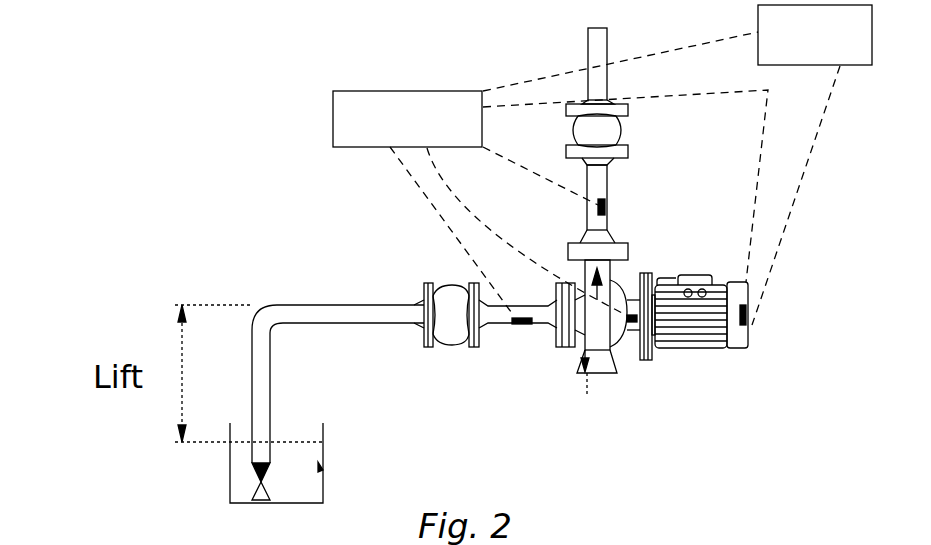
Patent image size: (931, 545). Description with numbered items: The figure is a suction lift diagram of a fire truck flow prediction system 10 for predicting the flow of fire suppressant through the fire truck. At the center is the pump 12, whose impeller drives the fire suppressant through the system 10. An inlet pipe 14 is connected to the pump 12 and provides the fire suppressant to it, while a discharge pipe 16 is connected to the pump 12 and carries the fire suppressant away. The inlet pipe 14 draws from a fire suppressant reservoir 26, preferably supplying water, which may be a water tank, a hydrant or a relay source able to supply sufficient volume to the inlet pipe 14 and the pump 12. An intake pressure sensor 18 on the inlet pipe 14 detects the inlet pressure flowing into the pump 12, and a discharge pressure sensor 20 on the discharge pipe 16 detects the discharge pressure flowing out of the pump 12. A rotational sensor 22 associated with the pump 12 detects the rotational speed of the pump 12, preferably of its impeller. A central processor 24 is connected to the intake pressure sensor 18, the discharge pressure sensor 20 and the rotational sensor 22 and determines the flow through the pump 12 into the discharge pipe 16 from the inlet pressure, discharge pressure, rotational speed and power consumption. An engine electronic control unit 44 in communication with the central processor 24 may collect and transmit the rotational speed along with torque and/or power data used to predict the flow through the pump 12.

The fire truck flow prediction system 10 is at (278, 184).
The pump 12 is at (620, 300).
The inlet pipe 14 is at (508, 318).
The discharge pipe 16 is at (590, 230).
The intake pressure sensor 18 is at (520, 324).
The discharge pressure sensor 20 is at (606, 207).
The rotational sensor 22 is at (633, 322).
The central processor 24 is at (353, 100).
The fire suppressant reservoir 26 is at (235, 480).
The engine electronic control unit 44 is at (762, 22).